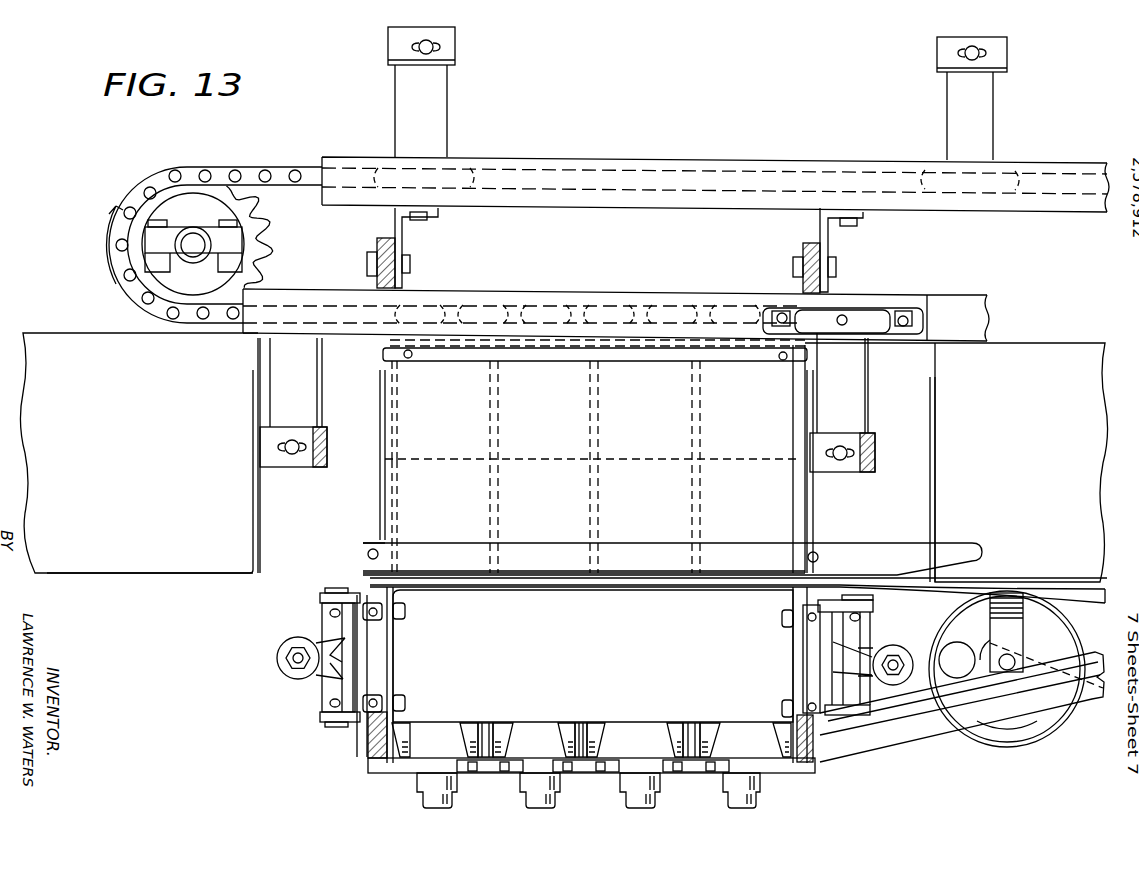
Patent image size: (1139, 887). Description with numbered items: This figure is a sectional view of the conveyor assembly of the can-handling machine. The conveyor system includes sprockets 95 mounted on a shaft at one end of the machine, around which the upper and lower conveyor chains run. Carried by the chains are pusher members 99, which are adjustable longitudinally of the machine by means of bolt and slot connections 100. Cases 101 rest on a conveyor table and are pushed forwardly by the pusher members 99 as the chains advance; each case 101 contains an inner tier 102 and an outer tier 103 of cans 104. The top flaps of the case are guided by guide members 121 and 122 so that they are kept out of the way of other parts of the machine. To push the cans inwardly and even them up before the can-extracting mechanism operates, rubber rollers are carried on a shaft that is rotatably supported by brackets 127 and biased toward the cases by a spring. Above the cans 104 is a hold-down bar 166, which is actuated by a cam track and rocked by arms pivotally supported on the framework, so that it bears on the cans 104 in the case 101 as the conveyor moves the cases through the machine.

The sprocket 95 is at (267, 221).
The pusher member 99 is at (875, 453).
The bolt and slot connection 100 is at (303, 455).
The case 101 is at (1017, 418).
The inner tier 102 is at (407, 402).
The outer tier 103 is at (403, 507).
The can 104 is at (551, 514).
The guide member 121 is at (1105, 592).
The guide member 122 is at (761, 540).
The bracket 127 is at (873, 605).
The hold-down bar 166 is at (747, 365).